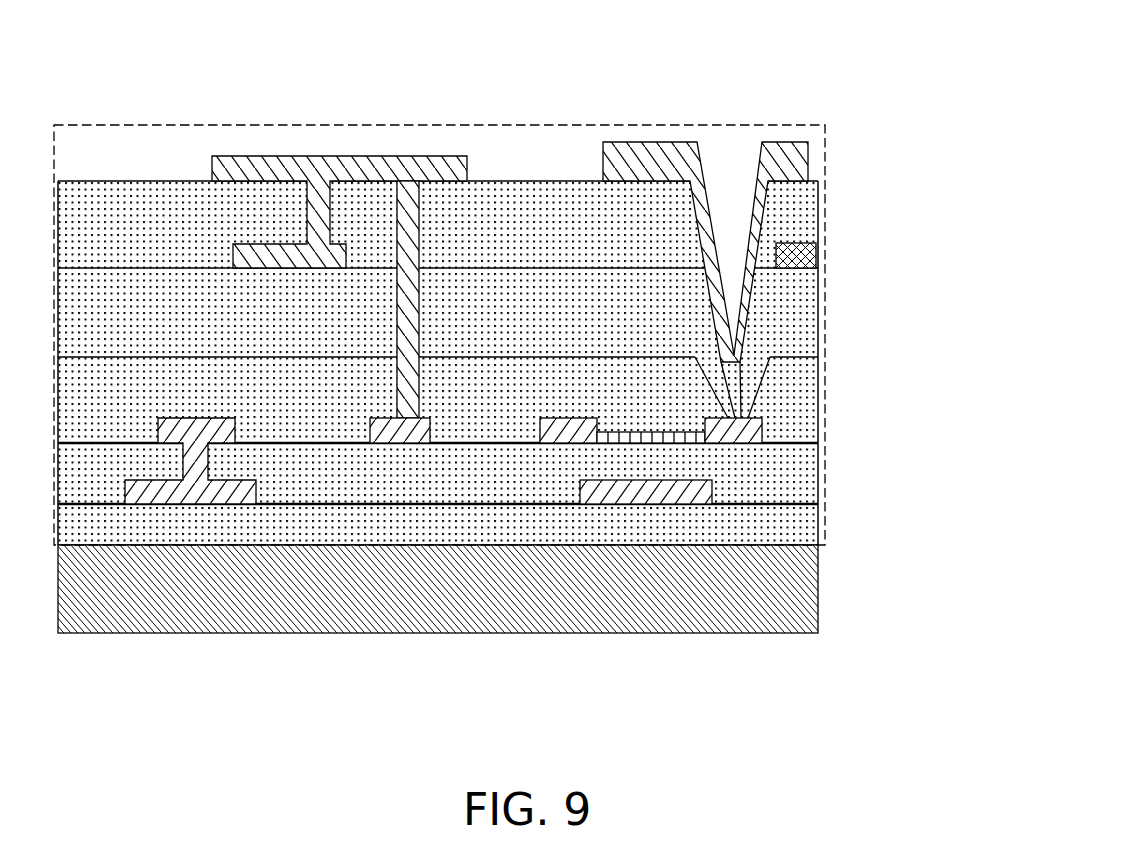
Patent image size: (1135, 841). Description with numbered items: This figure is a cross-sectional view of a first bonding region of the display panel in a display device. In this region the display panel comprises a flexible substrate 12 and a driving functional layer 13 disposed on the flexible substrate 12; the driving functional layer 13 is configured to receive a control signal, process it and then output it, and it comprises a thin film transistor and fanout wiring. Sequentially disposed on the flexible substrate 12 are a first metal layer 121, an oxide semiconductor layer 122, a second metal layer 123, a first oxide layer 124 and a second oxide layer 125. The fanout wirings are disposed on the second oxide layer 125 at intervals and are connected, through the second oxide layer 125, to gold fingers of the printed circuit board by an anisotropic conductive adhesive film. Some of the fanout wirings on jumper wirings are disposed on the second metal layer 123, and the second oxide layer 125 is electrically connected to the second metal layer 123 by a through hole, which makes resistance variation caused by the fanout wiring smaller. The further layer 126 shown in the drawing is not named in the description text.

The flexible substrate 12 is at (798, 610).
The driving functional layer 13 is at (695, 125).
The first metal layer 121 is at (223, 492).
The oxide semiconductor layer 122 is at (700, 438).
The second metal layer 123 is at (418, 426).
The first oxide layer 124 is at (800, 257).
The second oxide layer 125 is at (260, 168).
The dielectric layer 126 is at (800, 376).